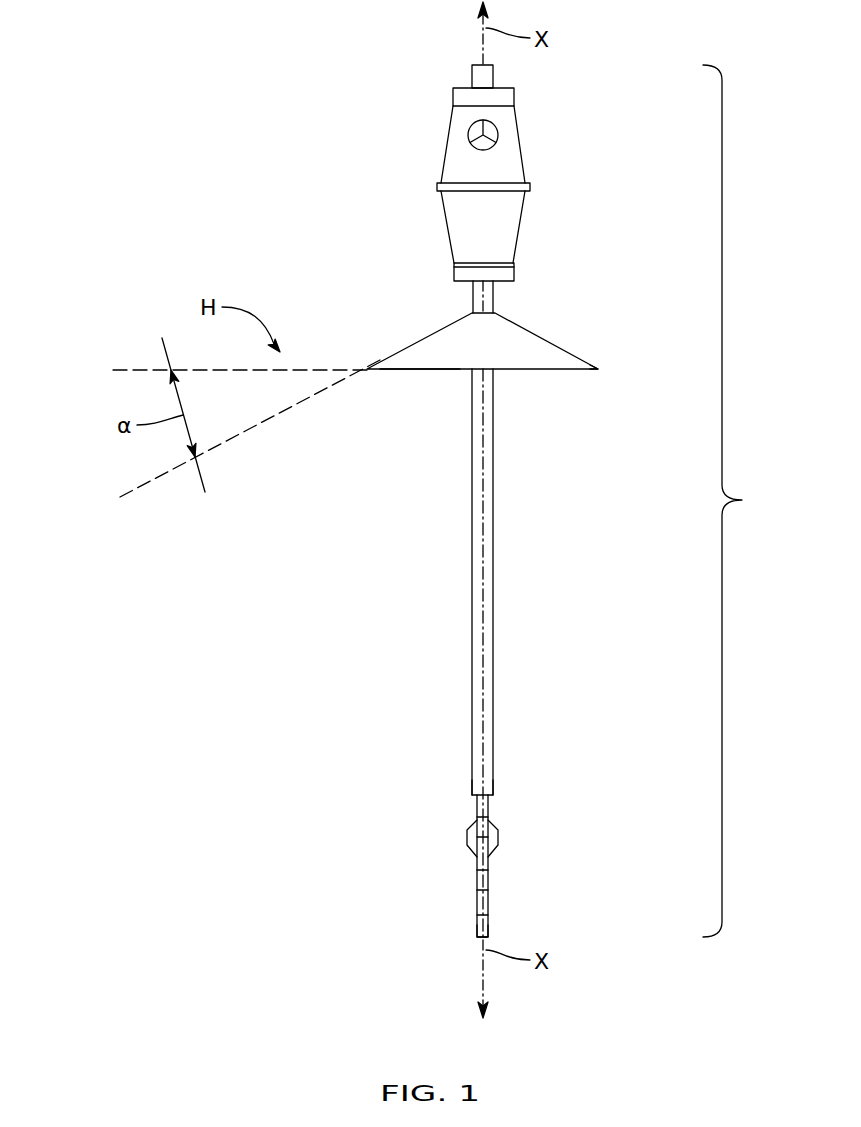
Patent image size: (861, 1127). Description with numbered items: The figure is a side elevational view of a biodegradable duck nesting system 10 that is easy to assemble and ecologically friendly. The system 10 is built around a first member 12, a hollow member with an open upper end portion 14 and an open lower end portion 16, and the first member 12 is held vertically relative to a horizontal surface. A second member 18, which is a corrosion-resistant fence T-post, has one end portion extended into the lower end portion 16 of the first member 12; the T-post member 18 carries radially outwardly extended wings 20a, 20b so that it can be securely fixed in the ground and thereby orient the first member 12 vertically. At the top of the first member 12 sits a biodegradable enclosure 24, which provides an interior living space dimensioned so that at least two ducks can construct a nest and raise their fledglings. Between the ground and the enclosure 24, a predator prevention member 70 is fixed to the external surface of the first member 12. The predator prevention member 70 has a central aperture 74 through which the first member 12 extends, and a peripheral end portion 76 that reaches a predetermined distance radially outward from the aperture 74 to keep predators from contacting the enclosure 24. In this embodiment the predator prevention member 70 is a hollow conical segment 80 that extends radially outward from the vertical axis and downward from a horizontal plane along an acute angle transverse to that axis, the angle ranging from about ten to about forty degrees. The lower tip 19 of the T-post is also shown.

The biodegradable duck nesting system 10 is at (739, 501).
The first member 12 is at (493, 605).
The upper end portion 14 is at (468, 57).
The lower end portion 16 is at (458, 768).
The second member 18 is at (488, 893).
The distal tip end 19 is at (456, 912).
The wing 20a is at (467, 838).
The wing 20b is at (498, 838).
The biodegradable enclosure 24 is at (426, 178).
The predator prevention member 70 is at (540, 318).
The central aperture 74 is at (456, 303).
The peripheral end portion 76 is at (617, 355).
The hollow conical segment 80 is at (413, 370).